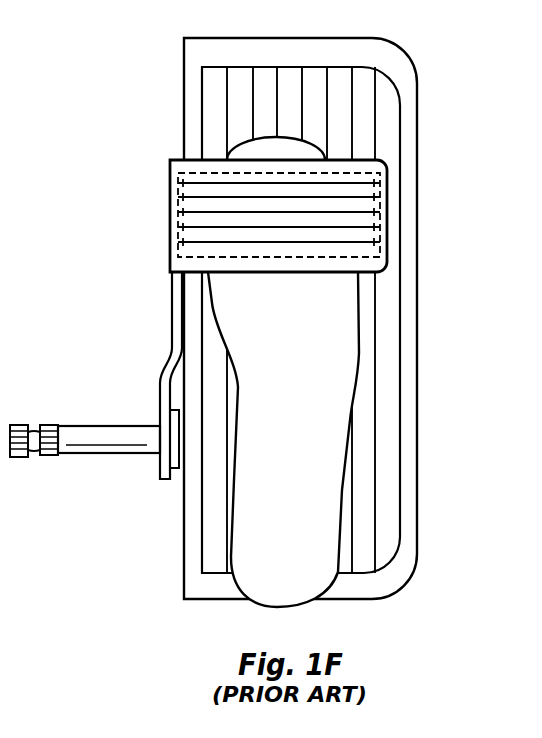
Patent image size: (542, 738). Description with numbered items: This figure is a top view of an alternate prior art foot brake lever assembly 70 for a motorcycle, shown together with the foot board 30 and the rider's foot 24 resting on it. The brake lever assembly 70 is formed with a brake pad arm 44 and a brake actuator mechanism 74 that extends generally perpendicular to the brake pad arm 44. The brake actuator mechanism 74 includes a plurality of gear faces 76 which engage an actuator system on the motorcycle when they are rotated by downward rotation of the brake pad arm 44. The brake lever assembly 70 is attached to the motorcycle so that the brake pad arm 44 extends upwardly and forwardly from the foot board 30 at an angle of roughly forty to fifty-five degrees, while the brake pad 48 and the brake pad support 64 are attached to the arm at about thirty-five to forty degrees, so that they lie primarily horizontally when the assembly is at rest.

The foot board 30 is at (395, 68).
The rider's foot 24 is at (302, 430).
The brake pad 48 is at (190, 190).
The brake pad support 64 is at (367, 190).
The brake lever assembly 70 is at (106, 247).
The brake pad arm 44 is at (173, 347).
The brake actuator mechanism 74 is at (88, 453).
The gear faces 76 is at (15, 422).